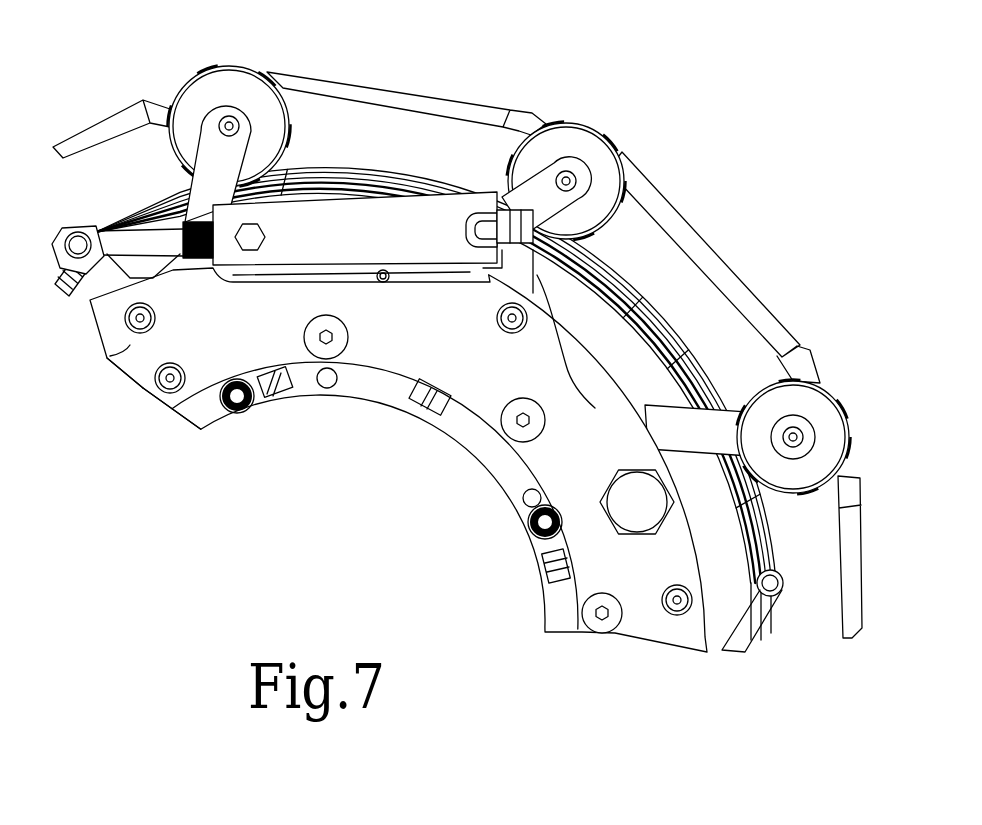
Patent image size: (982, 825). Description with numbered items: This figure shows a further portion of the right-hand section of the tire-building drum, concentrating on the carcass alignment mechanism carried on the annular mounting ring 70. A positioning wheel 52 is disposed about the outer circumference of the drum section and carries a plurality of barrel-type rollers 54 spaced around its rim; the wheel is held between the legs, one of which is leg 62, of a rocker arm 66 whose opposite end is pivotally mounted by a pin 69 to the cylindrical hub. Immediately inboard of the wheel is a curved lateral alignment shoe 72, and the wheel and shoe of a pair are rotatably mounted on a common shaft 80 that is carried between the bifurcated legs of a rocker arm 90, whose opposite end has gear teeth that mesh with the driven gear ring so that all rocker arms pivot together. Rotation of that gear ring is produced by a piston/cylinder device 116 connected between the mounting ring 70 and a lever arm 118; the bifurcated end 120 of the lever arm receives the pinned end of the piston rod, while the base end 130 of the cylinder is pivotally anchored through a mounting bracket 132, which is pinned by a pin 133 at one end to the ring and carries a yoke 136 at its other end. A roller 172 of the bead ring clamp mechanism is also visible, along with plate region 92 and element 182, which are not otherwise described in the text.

The positioning wheel 52 is at (231, 90).
The barrel-type roller 54 is at (203, 72).
The leg of rocker arm 62 is at (248, 126).
The rocker arm 66 is at (200, 185).
The pin 69 is at (150, 392).
The annular mounting ring 70 is at (107, 358).
The lateral alignment shoe 72 is at (160, 103).
The common shaft 80 is at (573, 173).
The rocker arm 90 is at (620, 160).
The support plate 92 is at (452, 356).
The piston/cylinder device 116 is at (363, 230).
The lever arm 118 is at (78, 294).
The bifurcated end 120 is at (67, 236).
The base end of cylinder 130 is at (483, 203).
The mounting bracket 132 is at (541, 282).
The pin 133 is at (512, 335).
The yoke 136 is at (570, 222).
The roller 172 is at (118, 240).
The bushing 182 is at (205, 265).